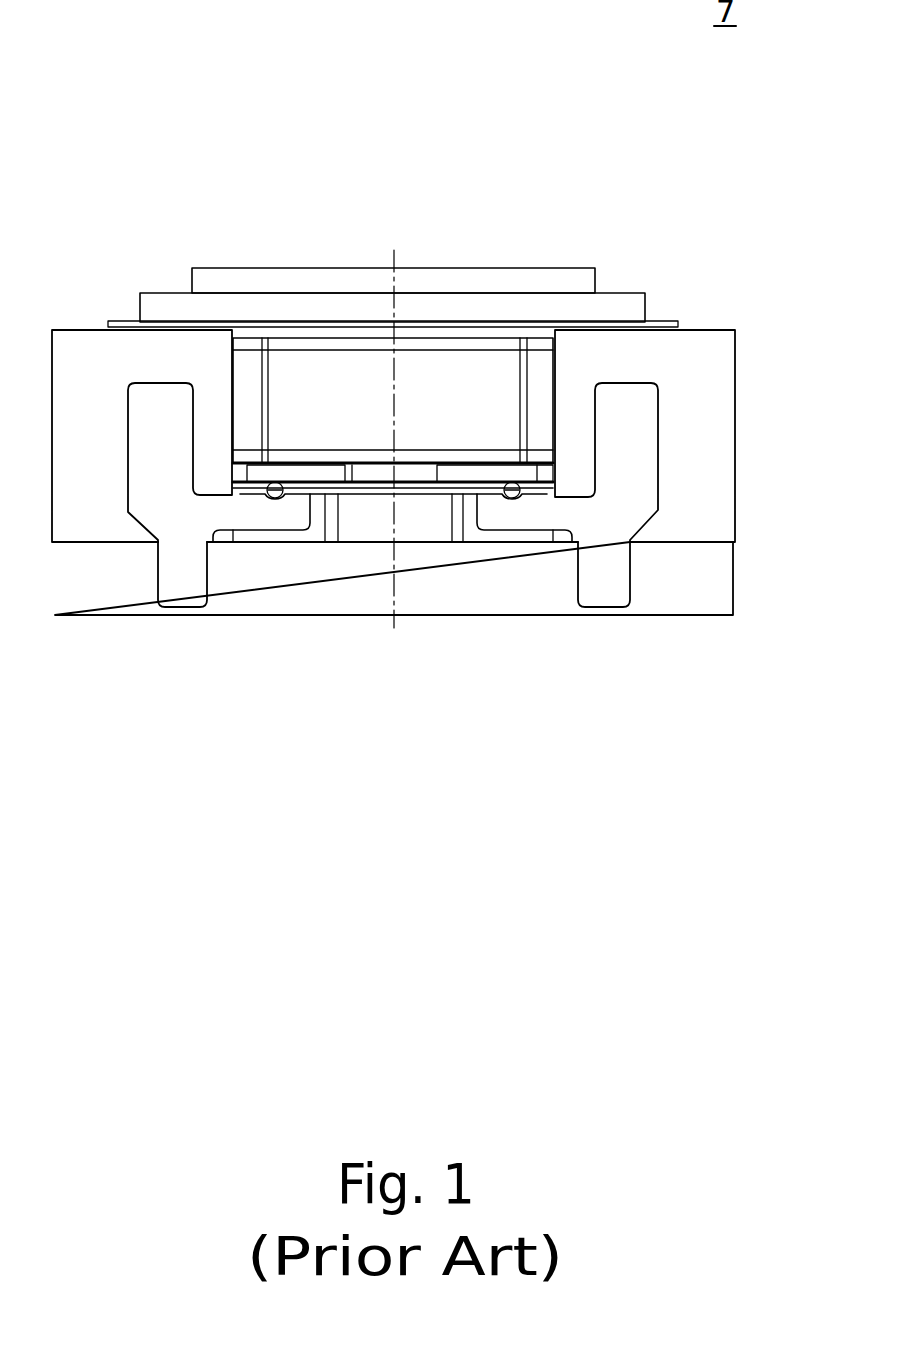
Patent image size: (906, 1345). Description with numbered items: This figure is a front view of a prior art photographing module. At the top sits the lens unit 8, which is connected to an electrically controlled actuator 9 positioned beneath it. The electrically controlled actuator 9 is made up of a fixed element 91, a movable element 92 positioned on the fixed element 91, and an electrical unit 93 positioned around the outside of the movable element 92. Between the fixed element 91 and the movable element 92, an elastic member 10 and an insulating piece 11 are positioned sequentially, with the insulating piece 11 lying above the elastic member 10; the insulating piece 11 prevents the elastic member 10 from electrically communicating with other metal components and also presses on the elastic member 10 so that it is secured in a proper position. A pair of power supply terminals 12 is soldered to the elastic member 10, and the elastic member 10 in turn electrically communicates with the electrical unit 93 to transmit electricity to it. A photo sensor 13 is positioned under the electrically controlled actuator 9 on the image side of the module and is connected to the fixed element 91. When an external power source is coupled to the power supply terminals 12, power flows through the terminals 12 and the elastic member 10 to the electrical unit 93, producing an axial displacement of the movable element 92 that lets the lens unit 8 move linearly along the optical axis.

The lens unit 8 is at (240, 288).
The electrically controlled actuator 9 is at (632, 168).
The fixed element 91 is at (685, 368).
The movable element 92 is at (630, 305).
The electrical unit 93 is at (472, 367).
The elastic member 10 is at (305, 472).
The insulating piece 11 is at (345, 455).
The power supply terminals 12 is at (186, 600).
The photo sensor 13 is at (520, 598).